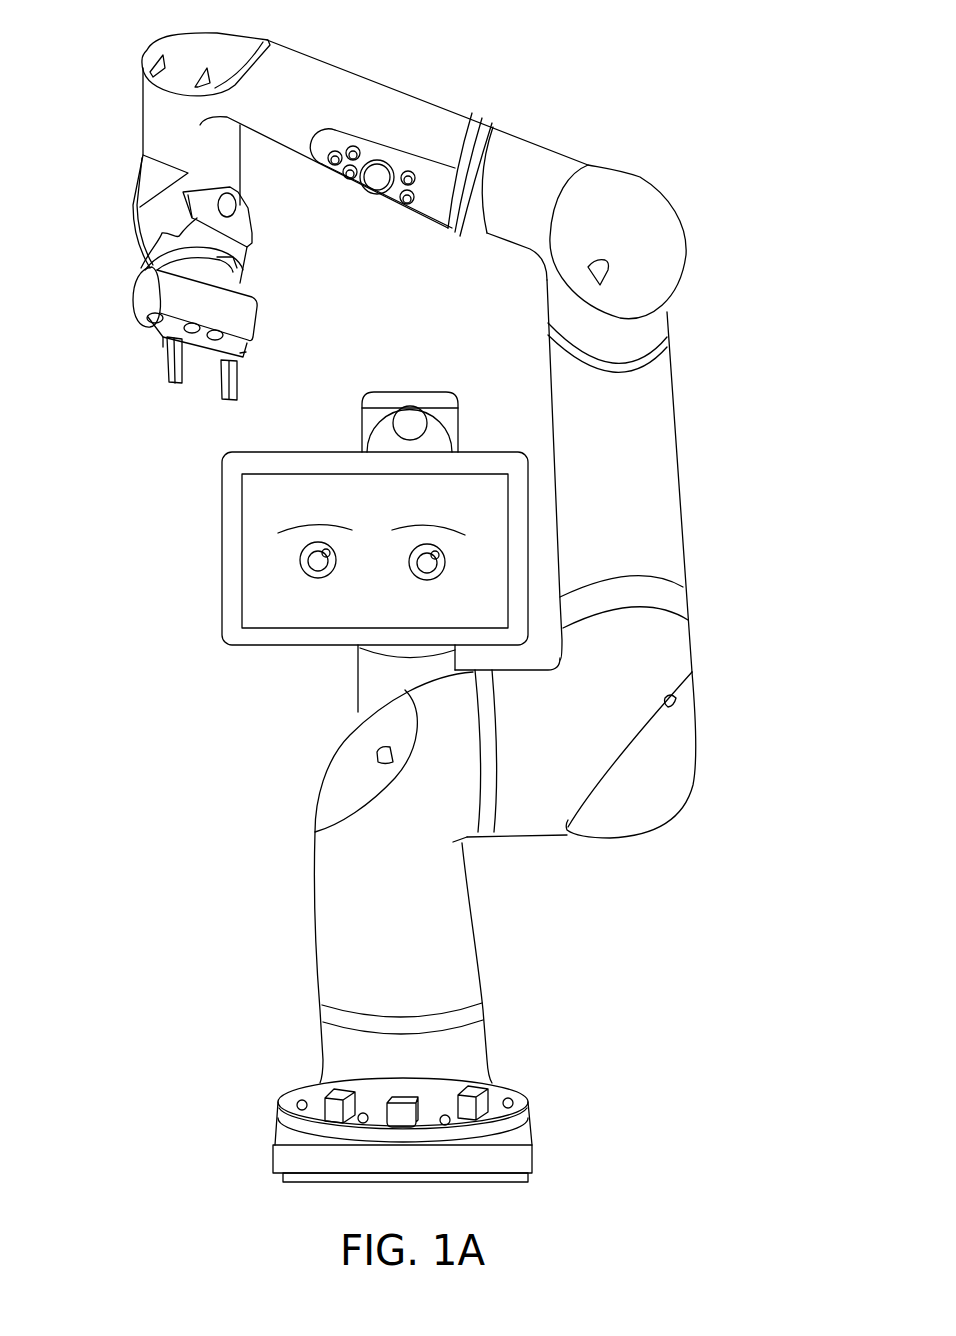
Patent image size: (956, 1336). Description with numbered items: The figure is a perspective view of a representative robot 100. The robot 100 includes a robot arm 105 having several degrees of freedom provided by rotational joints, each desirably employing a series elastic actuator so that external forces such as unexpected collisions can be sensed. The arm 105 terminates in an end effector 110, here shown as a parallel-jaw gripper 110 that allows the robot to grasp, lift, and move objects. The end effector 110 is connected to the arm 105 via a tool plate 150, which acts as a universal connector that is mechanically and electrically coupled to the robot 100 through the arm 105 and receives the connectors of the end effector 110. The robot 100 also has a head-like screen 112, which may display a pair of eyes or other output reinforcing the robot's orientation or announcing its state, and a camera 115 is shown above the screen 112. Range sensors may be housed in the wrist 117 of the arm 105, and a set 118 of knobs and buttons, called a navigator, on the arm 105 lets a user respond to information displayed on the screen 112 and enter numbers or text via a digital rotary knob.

The robot 100 is at (758, 86).
The robot arm 105 is at (677, 436).
The end effector 110 is at (155, 372).
The screen 112 is at (254, 585).
The camera 115 is at (413, 412).
The wrist 117 is at (126, 250).
The set of knobs and buttons 118 is at (428, 180).
The tool plate 150 is at (228, 272).